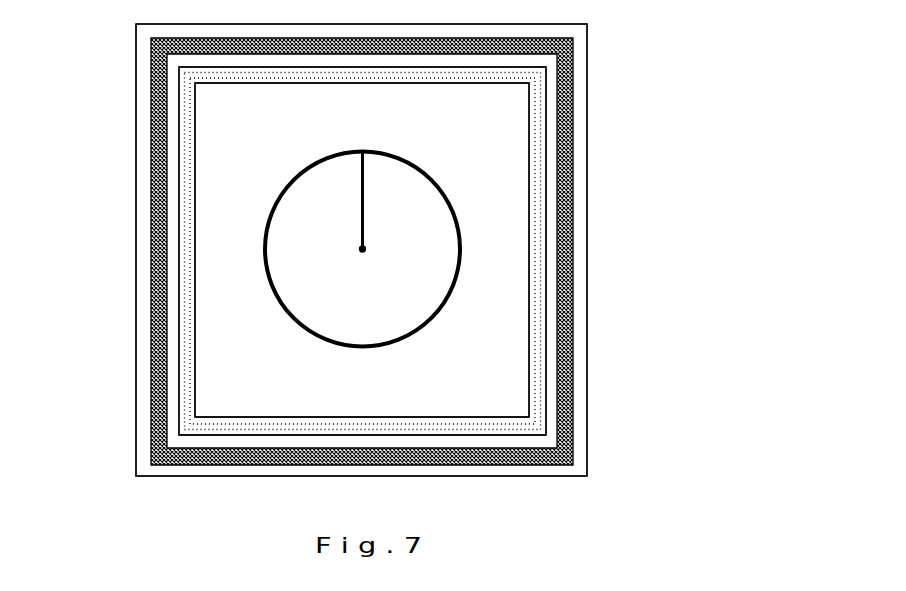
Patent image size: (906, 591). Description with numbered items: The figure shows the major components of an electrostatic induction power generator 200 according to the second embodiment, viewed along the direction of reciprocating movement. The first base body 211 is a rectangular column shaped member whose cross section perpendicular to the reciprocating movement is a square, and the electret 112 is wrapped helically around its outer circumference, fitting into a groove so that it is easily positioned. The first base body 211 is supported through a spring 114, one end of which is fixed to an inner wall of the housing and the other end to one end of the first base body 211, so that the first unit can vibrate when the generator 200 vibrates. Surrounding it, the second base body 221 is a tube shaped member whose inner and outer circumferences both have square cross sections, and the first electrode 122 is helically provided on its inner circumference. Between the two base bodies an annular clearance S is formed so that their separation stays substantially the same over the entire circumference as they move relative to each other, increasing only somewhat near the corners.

The electrostatic induction power generator 200 is at (642, 58).
The second base body 221 is at (580, 153).
The first electrode 122 is at (568, 230).
The electret 112 is at (187, 137).
The annular clearance S is at (552, 346).
The first base body 211 is at (215, 218).
The spring 114 is at (265, 262).